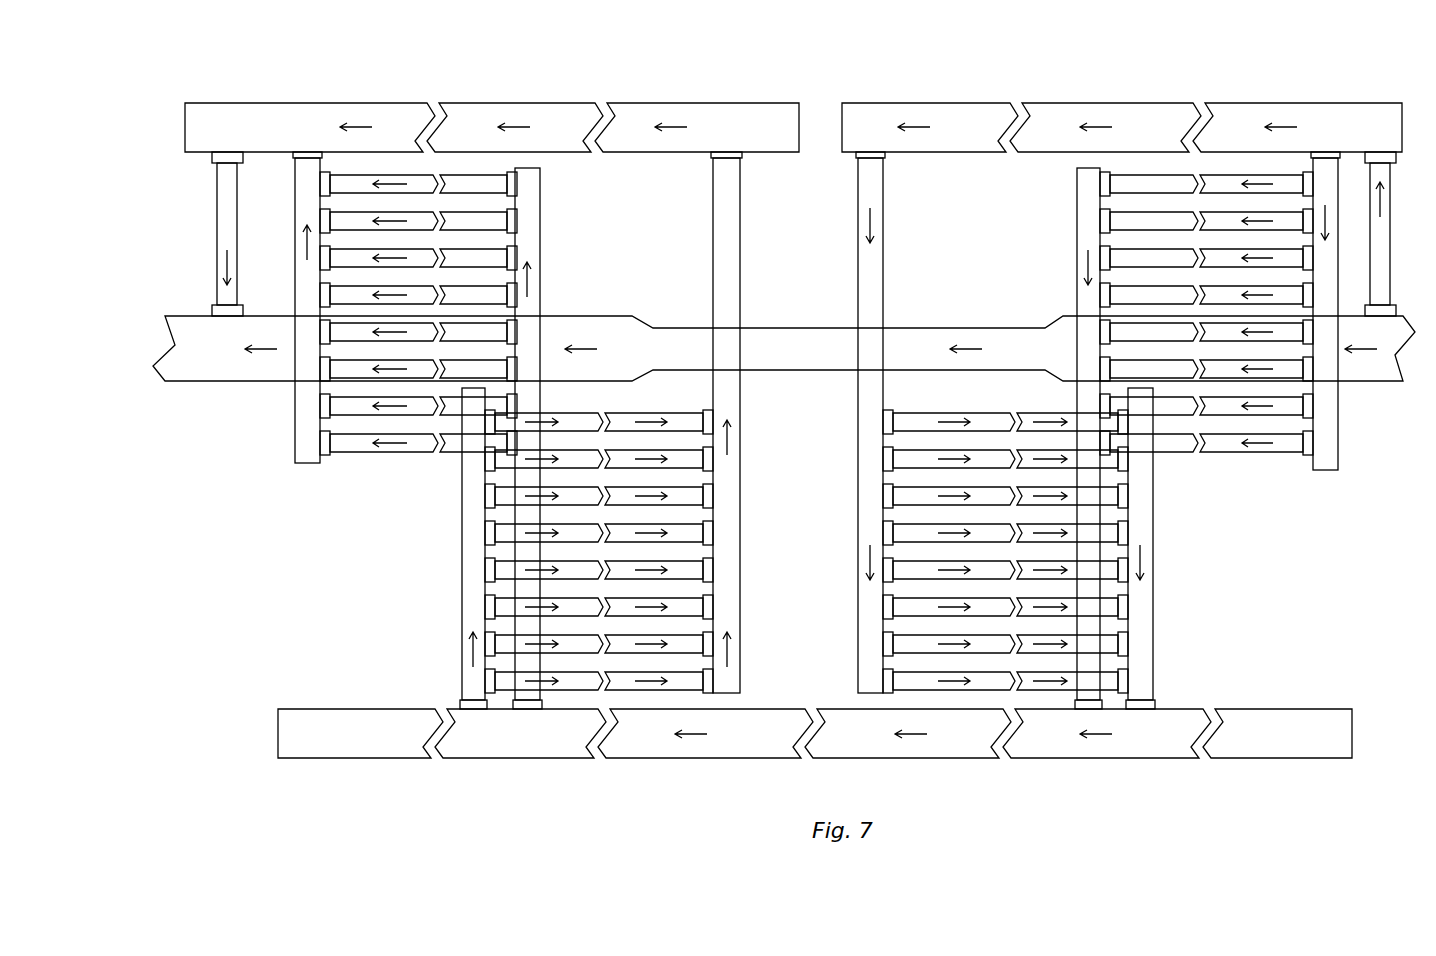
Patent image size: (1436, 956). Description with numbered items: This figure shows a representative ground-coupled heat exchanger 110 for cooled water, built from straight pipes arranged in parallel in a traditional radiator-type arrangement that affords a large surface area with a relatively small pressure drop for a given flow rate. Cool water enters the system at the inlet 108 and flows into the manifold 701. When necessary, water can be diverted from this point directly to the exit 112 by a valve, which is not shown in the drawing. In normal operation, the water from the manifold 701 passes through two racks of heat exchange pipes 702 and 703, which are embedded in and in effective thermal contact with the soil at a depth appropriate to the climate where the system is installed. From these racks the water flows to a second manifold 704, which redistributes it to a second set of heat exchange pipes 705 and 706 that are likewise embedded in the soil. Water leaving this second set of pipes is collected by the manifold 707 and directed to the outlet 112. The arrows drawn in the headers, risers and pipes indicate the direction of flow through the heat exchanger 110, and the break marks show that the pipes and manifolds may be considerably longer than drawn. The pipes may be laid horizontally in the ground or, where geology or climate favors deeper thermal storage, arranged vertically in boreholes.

The ground-coupled heat exchanger 110 is at (872, 82).
The exit 112 is at (190, 385).
The cool water inlet 108 is at (1398, 385).
The manifold 701 is at (1040, 160).
The heat exchange pipes 702 is at (1000, 405).
The heat exchange pipes 703 is at (1245, 450).
The second manifold 704 is at (795, 705).
The heat exchange pipes 705 is at (586, 542).
The heat exchange pipes 706 is at (400, 448).
The manifold 707 is at (565, 158).